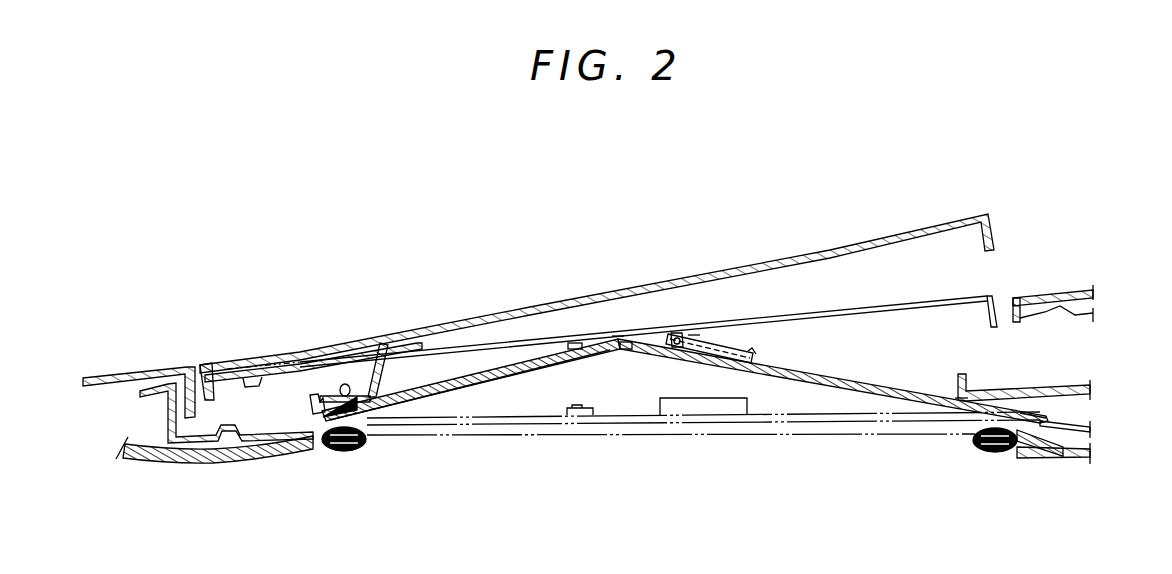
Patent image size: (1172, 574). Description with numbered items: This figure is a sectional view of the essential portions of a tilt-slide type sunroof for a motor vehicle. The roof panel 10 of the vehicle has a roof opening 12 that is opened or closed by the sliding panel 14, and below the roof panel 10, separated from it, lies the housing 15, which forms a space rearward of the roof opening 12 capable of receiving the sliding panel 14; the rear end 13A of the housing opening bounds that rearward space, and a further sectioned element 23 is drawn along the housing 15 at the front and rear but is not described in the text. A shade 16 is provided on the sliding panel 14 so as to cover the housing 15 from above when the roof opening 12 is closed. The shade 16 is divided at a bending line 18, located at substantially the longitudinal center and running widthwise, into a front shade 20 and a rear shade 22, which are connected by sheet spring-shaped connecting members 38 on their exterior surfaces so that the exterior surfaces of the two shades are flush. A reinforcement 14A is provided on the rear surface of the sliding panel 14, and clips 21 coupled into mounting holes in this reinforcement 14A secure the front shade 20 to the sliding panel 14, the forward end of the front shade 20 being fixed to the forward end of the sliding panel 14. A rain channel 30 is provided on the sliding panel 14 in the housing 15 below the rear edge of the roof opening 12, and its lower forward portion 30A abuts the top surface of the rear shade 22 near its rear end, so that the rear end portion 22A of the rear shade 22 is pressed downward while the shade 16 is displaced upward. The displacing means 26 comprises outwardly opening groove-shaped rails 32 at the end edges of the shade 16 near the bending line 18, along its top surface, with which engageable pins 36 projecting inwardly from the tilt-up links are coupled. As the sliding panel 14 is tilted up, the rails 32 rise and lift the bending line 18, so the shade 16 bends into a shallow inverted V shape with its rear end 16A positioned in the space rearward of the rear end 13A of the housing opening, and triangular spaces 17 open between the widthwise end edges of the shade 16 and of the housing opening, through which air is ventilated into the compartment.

The roof panel 10 is at (166, 372).
The roof opening 12 is at (943, 337).
The rear end of the housing opening 13A is at (974, 441).
The sliding panel 14 is at (590, 297).
The reinforcement 14A is at (300, 356).
The housing 15 is at (275, 439).
The shade 16 is at (518, 380).
The rear end of the shade 16A is at (1044, 421).
The triangular spaces 17 is at (595, 408).
The bending line 18 is at (622, 352).
The front shade 20 is at (460, 385).
The clips 21 is at (353, 383).
The rear shade 22 is at (800, 373).
The rear end portion of the rear shade 22A is at (977, 416).
The weatherstrip 23 is at (228, 456).
The displacing means 26 is at (680, 328).
The rain channel 30 is at (963, 376).
The lower forward portion of the rain channel 30A is at (962, 400).
The groove-shaped rails 32 is at (744, 347).
The engageable pins 36 is at (691, 334).
The sheet spring-shaped connecting members 38 is at (612, 342).